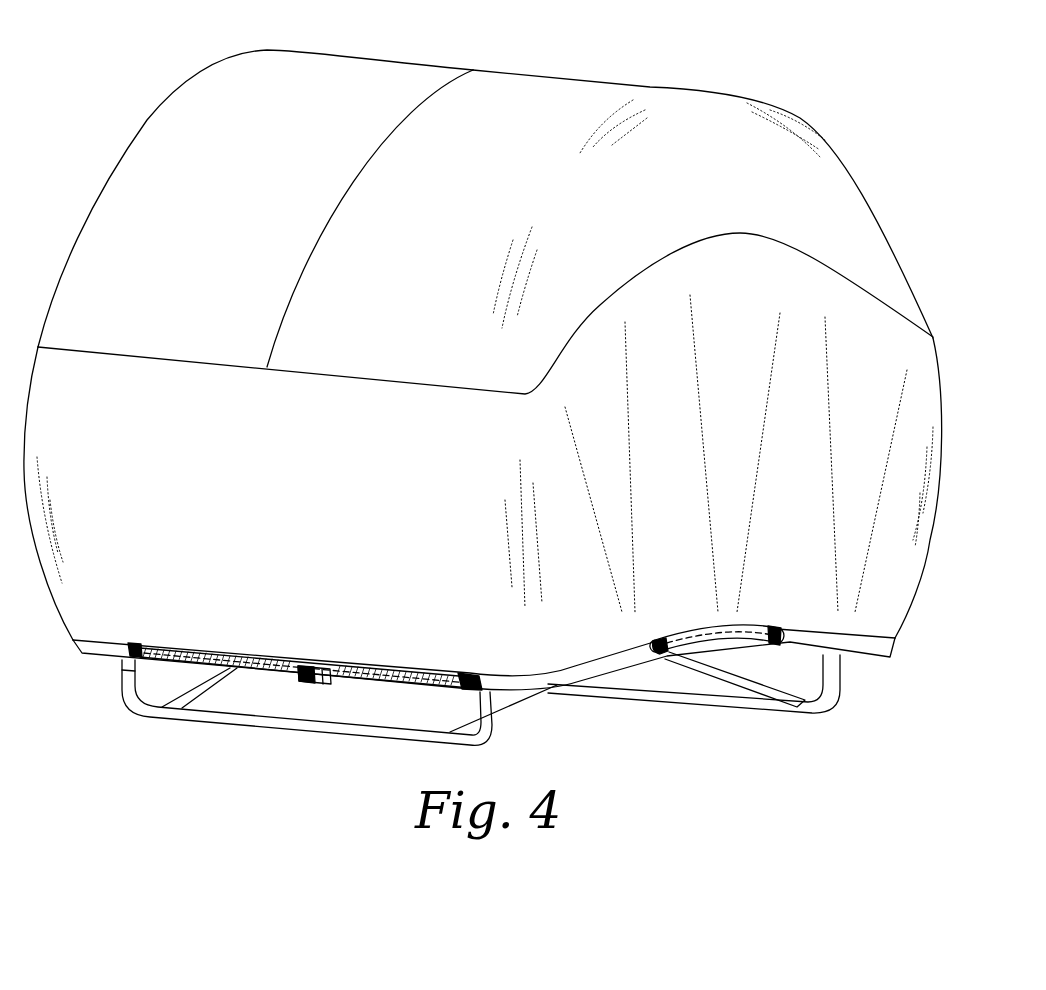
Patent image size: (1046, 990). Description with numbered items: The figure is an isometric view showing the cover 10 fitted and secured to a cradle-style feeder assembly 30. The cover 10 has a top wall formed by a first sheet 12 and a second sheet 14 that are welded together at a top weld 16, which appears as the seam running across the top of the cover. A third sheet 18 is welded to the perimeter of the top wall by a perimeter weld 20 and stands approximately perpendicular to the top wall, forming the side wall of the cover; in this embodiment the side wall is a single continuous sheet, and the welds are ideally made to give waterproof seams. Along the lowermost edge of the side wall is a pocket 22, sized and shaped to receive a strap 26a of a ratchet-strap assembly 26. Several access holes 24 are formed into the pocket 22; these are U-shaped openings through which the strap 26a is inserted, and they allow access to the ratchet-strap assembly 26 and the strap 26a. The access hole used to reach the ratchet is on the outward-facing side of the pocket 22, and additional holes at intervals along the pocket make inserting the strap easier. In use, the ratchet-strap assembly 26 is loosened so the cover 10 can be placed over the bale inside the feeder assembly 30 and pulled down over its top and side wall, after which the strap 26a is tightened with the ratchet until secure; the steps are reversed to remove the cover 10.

The cover 10 is at (483, 365).
The first sheet 12 is at (361, 70).
The second sheet 14 is at (556, 87).
The top weld 16 is at (451, 82).
The third sheet 18 is at (68, 605).
The perimeter weld 20 is at (733, 232).
The pocket 22 is at (98, 648).
The access holes 24 is at (133, 640).
The ratchet-strap assembly 26 is at (313, 655).
The strap 26a is at (198, 648).
The cradle-style feeder assembly 30 is at (683, 709).